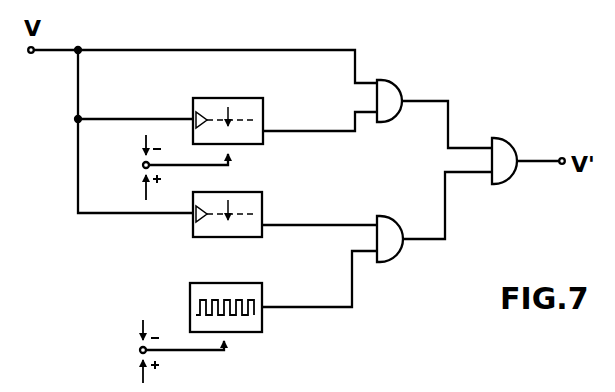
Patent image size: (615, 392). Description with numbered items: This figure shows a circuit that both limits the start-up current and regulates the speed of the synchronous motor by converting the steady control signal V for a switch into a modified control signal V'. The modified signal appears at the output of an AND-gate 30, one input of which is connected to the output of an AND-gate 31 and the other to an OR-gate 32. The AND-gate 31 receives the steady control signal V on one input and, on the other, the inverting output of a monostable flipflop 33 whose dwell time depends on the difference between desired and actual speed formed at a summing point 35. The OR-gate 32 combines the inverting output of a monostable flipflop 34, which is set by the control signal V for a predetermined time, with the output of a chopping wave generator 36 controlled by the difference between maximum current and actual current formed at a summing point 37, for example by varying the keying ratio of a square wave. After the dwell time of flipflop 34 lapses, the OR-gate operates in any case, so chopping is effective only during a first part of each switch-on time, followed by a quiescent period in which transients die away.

The AND-gate 30 is at (508, 150).
The AND-gate 31 is at (390, 91).
The OR-gate 32 is at (389, 259).
The monostable flipflop 33 is at (255, 98).
The monostable flipflop 34 is at (258, 200).
The summing point 35 is at (143, 165).
The chopping wave generator 36 is at (250, 325).
The summing point 37 is at (140, 350).